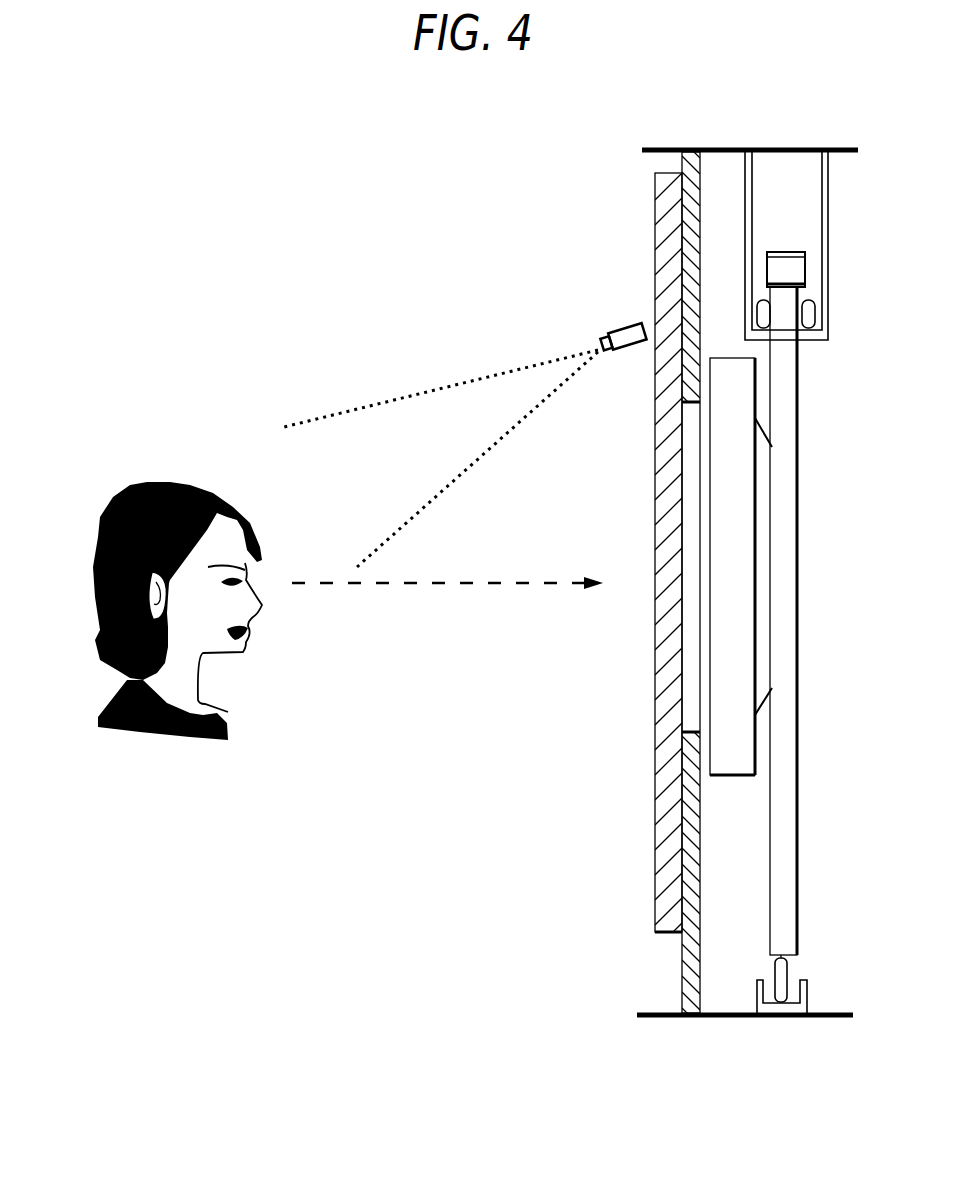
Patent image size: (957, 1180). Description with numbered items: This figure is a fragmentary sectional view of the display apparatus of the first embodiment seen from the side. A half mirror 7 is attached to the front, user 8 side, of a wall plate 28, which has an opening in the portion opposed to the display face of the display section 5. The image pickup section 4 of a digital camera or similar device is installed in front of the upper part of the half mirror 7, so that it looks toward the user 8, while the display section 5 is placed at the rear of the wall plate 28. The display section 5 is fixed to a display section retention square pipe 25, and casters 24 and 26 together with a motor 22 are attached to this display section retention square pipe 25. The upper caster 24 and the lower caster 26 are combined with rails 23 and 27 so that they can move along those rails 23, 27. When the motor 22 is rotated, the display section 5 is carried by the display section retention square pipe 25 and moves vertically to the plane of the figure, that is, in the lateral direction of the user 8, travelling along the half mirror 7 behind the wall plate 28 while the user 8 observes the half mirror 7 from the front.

The image pickup section 4 is at (620, 330).
The display section 5 is at (797, 568).
The half mirror 7 is at (655, 790).
The user 8 is at (93, 548).
The motor 22 is at (805, 268).
The rail 23 is at (830, 205).
The caster 24 is at (810, 330).
The display section retention square pipe 25 is at (797, 803).
The caster 26 is at (790, 968).
The rail 27 is at (807, 995).
The wall plate 28 is at (680, 975).